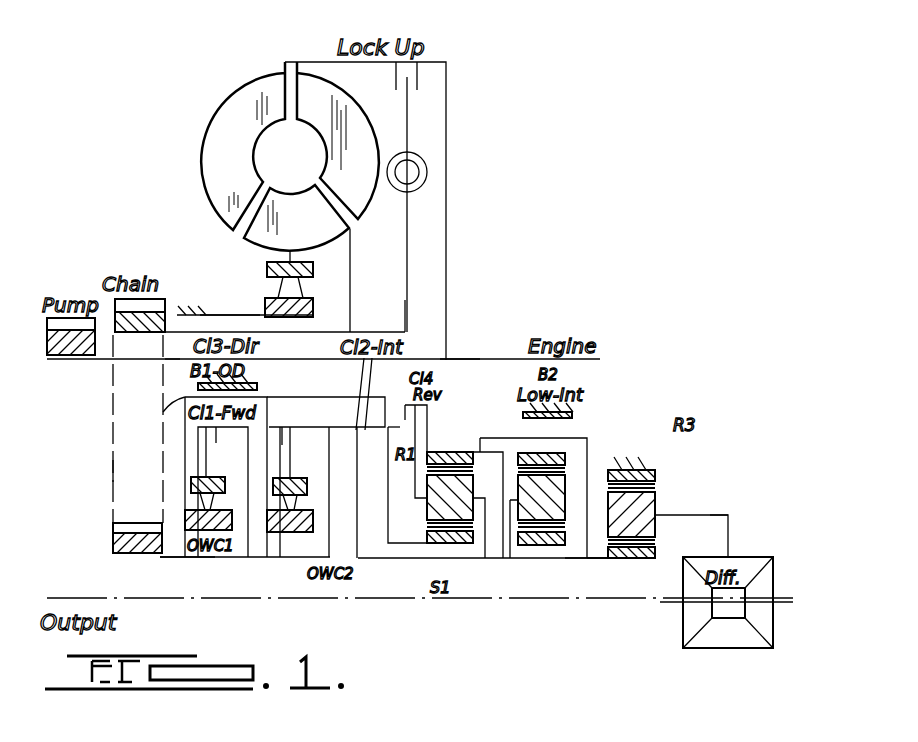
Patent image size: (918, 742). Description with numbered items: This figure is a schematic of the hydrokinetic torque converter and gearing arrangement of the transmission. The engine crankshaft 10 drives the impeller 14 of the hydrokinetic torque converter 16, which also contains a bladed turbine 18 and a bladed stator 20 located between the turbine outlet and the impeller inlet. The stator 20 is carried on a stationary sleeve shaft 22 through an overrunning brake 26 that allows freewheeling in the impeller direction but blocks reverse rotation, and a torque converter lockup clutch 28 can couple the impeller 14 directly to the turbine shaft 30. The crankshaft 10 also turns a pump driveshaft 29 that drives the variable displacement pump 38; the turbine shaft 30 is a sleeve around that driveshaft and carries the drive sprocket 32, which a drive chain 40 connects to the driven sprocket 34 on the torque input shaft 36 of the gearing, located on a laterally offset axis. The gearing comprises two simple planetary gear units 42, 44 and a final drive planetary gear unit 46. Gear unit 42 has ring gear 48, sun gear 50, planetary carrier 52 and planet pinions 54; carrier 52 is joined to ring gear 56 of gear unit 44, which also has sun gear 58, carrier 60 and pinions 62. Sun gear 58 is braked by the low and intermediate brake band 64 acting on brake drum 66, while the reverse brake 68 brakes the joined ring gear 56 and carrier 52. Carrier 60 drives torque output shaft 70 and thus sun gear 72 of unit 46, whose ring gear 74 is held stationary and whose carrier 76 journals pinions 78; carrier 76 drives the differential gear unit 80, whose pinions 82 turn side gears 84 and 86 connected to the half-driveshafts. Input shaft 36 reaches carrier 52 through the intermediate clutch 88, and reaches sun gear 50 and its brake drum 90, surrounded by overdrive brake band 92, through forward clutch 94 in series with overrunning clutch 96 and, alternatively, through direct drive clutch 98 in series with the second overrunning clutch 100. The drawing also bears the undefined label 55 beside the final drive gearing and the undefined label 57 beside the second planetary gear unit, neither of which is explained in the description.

The crankshaft 10 is at (458, 359).
The impeller 14 is at (232, 162).
The hydrokinetic torque converter 16 is at (203, 132).
The bladed turbine 18 is at (375, 171).
The bladed stator 20 is at (314, 230).
The stationary sleeve shaft 22 is at (218, 315).
The overrunning brake 26 is at (300, 272).
The torque converter lockup clutch 28 is at (425, 88).
The pump driveshaft 29 is at (177, 359).
The turbine shaft 30 is at (367, 332).
The drive sprocket 32 is at (137, 330).
The driven sprocket 34 is at (113, 538).
The torque input shaft 36 is at (187, 557).
The variable displacement pump 38 is at (67, 343).
The drive chain 40 is at (113, 472).
The simple planetary gear unit 42 is at (467, 450).
The simple planetary gear unit 44 is at (565, 453).
The final drive planetary gear unit 46 is at (668, 475).
The ring gear 48 is at (440, 451).
The sun gear 50 is at (435, 545).
The planetary carrier 52 is at (484, 500).
The planet pinions 54 is at (432, 519).
The third sun gear 55 is at (620, 560).
The ring gear 56 is at (546, 443).
The second planet gears 57 is at (550, 512).
The sun gear 58 is at (514, 567).
The planetary carrier 60 is at (510, 540).
The planet pinions 62 is at (540, 548).
The low and intermediate brake band 64 is at (577, 414).
The brake drum 66 is at (656, 470).
The reverse brake 68 is at (430, 417).
The torque output shaft 70 is at (586, 562).
The sun gear 72 is at (640, 558).
The ring gear 74 is at (660, 477).
The carrier 76 is at (717, 515).
The pinions 78 is at (658, 500).
The differential gear unit 80 is at (683, 646).
The pinions 82 is at (762, 557).
The side gear 84 is at (687, 621).
The side gear 86 is at (773, 620).
The intermediate speed ratio clutch 88 is at (362, 397).
The brake drum 90 is at (315, 397).
The overdrive brake band 92 is at (197, 383).
The forward clutch 94 is at (200, 433).
The overrunning clutch 96 is at (207, 498).
The direct drive clutch 98 is at (295, 442).
The second overrunning clutch 100 is at (280, 535).